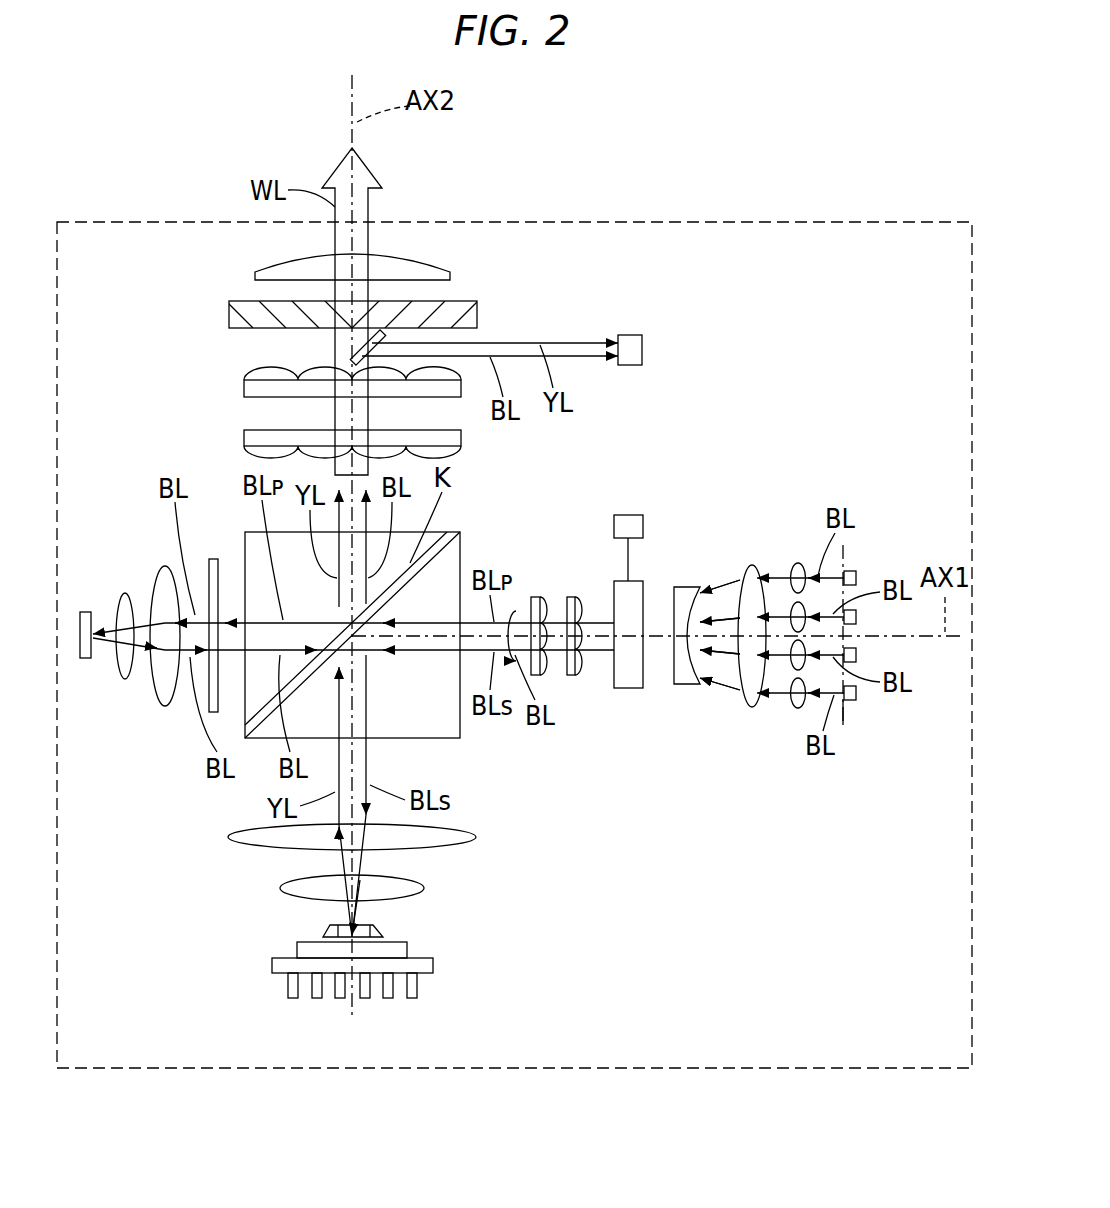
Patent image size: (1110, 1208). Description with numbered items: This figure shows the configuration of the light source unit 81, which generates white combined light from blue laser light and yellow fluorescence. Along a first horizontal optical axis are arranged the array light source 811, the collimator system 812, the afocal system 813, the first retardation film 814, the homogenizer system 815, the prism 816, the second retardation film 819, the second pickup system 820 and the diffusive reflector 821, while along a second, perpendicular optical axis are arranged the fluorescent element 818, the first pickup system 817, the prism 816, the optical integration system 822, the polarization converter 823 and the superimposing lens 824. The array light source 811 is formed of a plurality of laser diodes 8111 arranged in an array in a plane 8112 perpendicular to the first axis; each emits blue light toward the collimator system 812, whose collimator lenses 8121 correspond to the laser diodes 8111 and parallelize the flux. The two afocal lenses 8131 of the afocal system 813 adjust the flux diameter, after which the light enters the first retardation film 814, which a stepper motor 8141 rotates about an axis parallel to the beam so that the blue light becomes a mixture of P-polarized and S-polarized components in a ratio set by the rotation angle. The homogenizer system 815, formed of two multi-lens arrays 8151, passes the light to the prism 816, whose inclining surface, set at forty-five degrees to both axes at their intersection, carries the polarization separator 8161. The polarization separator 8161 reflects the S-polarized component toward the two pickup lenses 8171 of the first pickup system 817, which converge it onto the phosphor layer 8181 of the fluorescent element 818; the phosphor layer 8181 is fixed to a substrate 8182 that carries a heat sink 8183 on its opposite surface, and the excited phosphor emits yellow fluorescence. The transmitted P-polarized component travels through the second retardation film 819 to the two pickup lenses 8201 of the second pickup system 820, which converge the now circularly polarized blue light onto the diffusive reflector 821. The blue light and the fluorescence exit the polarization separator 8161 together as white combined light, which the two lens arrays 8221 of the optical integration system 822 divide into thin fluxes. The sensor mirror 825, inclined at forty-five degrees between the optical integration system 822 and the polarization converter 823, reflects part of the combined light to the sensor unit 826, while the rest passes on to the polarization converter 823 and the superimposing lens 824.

The light source unit 81 is at (866, 222).
The array light source 811 is at (905, 633).
The laser diode 8111 is at (857, 575).
The plane 8112 is at (845, 718).
The collimator system 812 is at (792, 607).
The collimator lens 8121 is at (792, 560).
The afocal system 813 is at (716, 583).
The afocal lens 8131 is at (782, 508).
The first retardation film 814 is at (628, 690).
The stepper motor 8141 is at (628, 515).
The homogenizer system 815 is at (538, 578).
The multi-lens array 8151 is at (605, 530).
The prism 816 is at (403, 612).
The polarization separator 8161 is at (443, 535).
The first pickup system 817 is at (445, 869).
The pickup lens 8171 is at (440, 835).
The fluorescent element 818 is at (354, 946).
The phosphor layer 8181 is at (335, 933).
The substrate 8182 is at (303, 950).
The heat sink 8183 is at (275, 965).
The second retardation film 819 is at (213, 557).
The second pickup system 820 is at (125, 697).
The pickup lens 8201 is at (115, 672).
The diffusive reflector 821 is at (85, 610).
The optical integration system 822 is at (273, 411).
The lens array 8221 is at (244, 390).
The polarization converter 823 is at (478, 315).
The superimposing lens 824 is at (446, 270).
The sensor mirror 825 is at (350, 347).
The sensor unit 826 is at (643, 350).